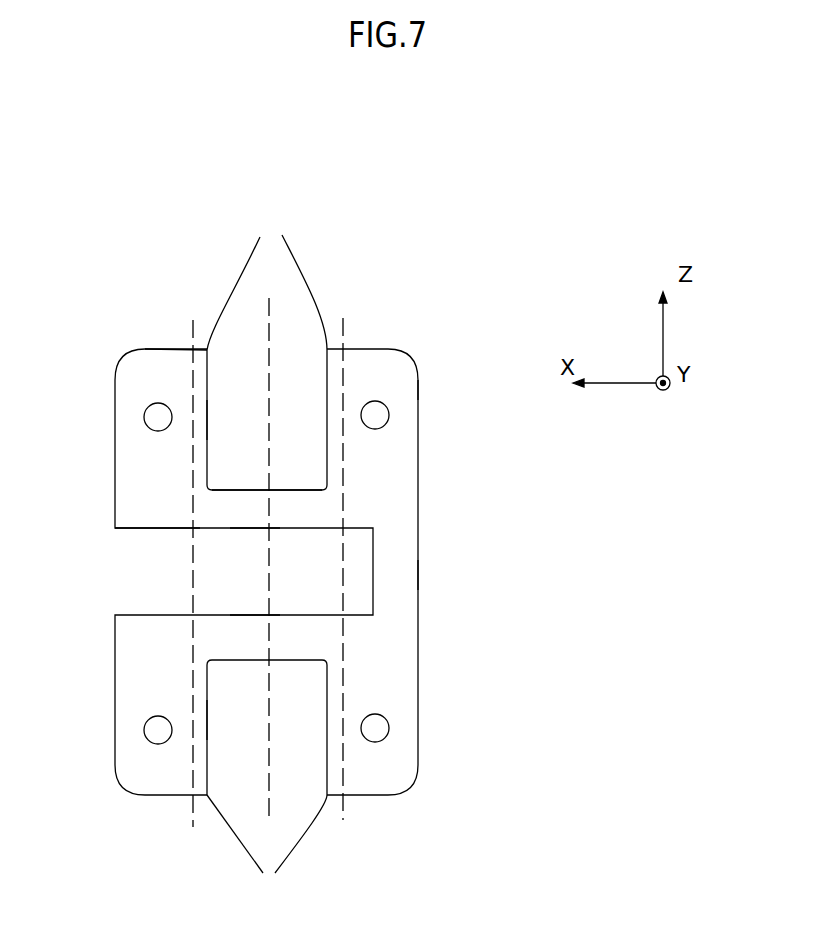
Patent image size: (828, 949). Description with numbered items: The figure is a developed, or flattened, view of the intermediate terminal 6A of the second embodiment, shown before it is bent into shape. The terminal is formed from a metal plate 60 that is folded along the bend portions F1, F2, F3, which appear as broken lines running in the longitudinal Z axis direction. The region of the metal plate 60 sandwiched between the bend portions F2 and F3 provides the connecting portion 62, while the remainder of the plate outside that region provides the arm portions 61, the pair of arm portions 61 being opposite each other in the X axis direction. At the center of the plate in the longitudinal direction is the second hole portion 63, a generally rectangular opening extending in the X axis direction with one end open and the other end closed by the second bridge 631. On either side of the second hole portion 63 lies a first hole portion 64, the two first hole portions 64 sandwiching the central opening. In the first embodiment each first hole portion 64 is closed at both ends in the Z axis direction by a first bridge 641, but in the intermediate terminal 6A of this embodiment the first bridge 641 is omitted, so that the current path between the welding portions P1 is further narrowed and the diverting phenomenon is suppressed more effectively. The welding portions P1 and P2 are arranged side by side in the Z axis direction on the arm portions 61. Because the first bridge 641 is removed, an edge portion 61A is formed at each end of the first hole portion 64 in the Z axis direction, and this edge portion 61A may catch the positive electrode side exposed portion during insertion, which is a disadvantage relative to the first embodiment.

The intermediate terminal 6A is at (415, 278).
The metal plate 60 is at (387, 349).
The arm portion 61 is at (419, 390).
The edge portion 61A is at (267, 557).
The connecting portion 62 is at (300, 503).
The second hole portion 63 is at (140, 530).
The second bridge 631 is at (402, 575).
The first hole portion 64 is at (208, 420).
The first bridge 641 is at (237, 512).
The bend portion F1 is at (275, 546).
The bend portion F2 is at (198, 559).
The bend portion F3 is at (348, 556).
The welding portion P1 is at (143, 421).
The welding portion P2 is at (143, 733).